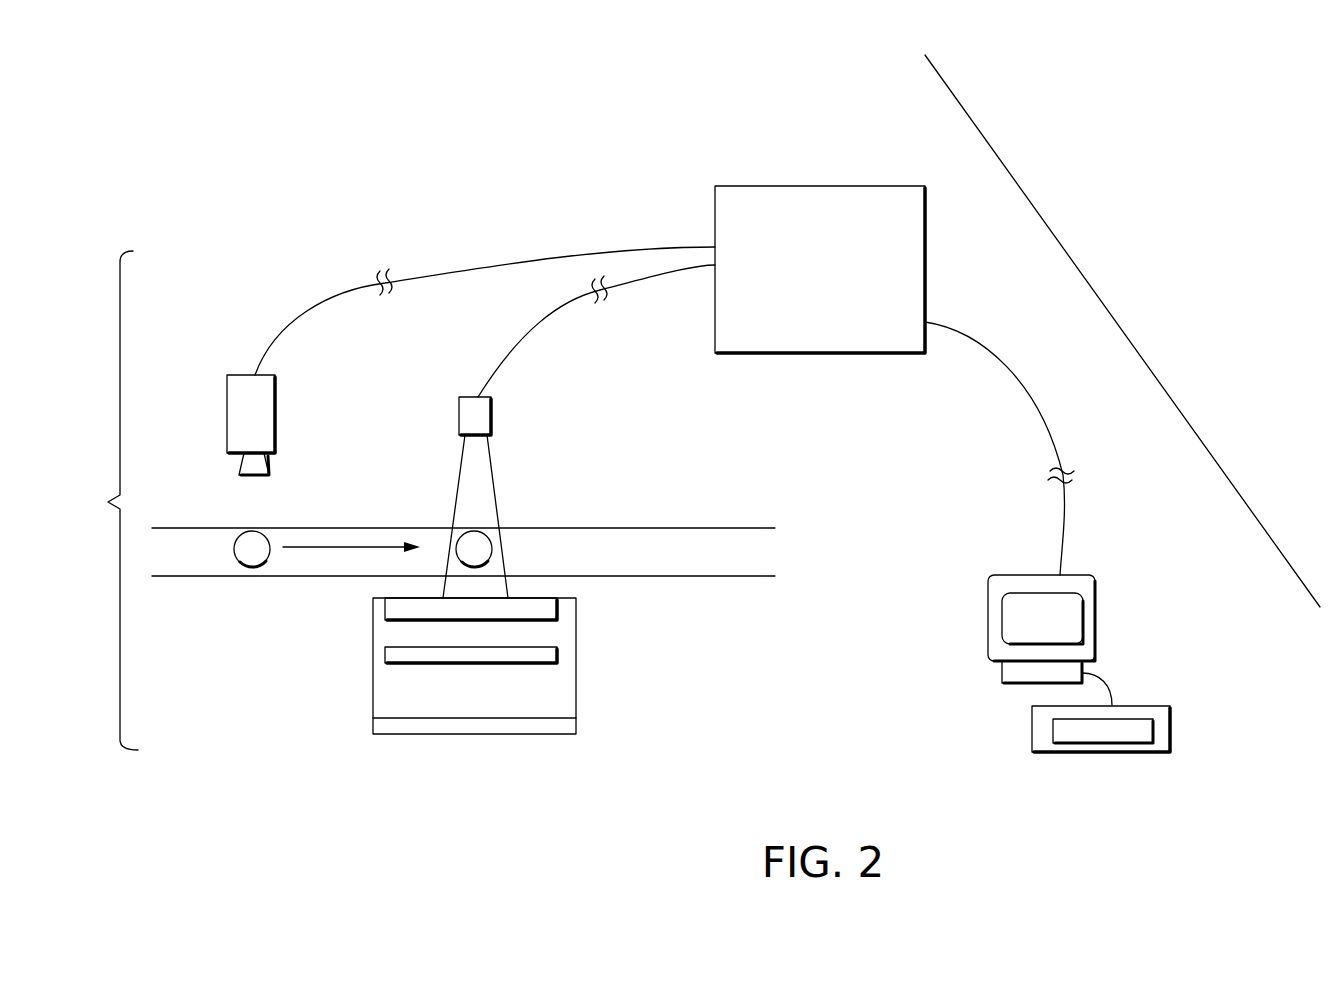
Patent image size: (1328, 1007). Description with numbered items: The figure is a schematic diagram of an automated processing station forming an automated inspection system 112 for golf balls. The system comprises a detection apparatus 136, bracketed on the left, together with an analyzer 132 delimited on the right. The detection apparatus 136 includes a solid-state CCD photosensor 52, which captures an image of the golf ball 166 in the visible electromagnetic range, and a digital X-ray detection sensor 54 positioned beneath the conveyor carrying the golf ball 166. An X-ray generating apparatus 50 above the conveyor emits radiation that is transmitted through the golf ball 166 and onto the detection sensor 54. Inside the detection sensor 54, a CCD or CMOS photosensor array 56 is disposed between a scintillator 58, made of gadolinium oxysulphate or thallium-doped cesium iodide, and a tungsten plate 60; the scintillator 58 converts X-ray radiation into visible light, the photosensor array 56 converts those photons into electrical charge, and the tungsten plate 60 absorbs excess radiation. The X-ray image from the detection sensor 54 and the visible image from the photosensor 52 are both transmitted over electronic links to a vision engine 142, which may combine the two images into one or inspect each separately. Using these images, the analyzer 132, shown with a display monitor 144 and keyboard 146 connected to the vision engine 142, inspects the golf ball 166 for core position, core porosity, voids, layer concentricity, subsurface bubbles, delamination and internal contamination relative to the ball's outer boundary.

The automated inspection system 112 is at (195, 92).
The detection apparatus 136 is at (97, 500).
The solid-state CCD photosensor 52 is at (240, 375).
The X-ray generating apparatus 50 is at (471, 397).
The golf ball 166 is at (252, 567).
The digital X-ray detection sensor 54 is at (409, 737).
The tungsten plate 60 is at (480, 725).
The scintillator 58 is at (385, 608).
The photosensor array 56 is at (557, 653).
The vision engine 142 is at (791, 273).
The display monitor 144 is at (1097, 620).
The keyboard 146 is at (1170, 733).
The analyzer 132 is at (1118, 319).